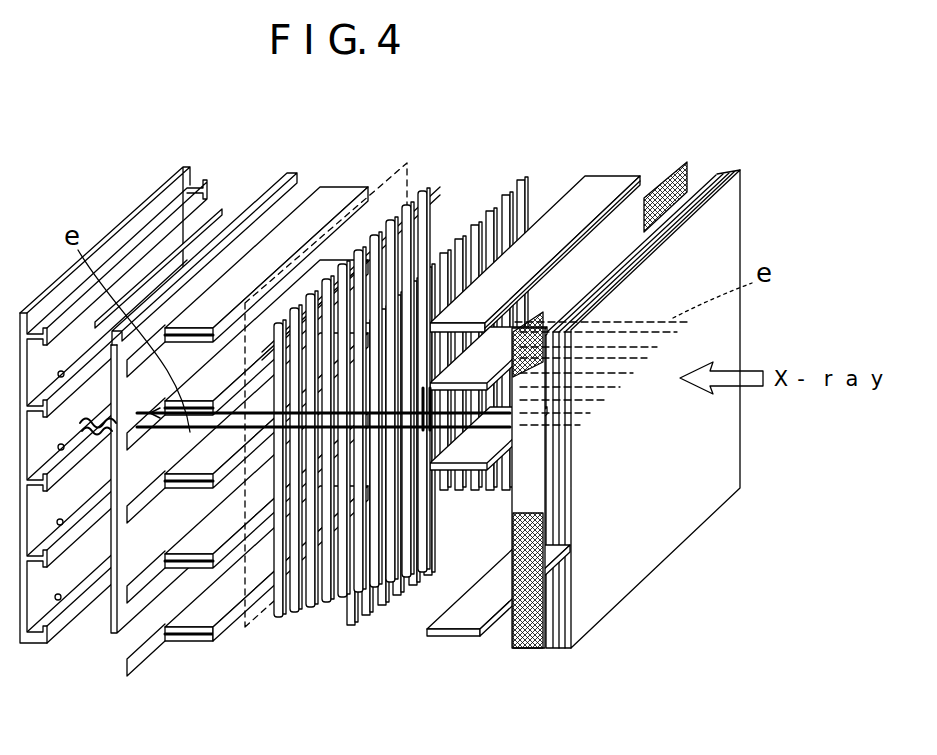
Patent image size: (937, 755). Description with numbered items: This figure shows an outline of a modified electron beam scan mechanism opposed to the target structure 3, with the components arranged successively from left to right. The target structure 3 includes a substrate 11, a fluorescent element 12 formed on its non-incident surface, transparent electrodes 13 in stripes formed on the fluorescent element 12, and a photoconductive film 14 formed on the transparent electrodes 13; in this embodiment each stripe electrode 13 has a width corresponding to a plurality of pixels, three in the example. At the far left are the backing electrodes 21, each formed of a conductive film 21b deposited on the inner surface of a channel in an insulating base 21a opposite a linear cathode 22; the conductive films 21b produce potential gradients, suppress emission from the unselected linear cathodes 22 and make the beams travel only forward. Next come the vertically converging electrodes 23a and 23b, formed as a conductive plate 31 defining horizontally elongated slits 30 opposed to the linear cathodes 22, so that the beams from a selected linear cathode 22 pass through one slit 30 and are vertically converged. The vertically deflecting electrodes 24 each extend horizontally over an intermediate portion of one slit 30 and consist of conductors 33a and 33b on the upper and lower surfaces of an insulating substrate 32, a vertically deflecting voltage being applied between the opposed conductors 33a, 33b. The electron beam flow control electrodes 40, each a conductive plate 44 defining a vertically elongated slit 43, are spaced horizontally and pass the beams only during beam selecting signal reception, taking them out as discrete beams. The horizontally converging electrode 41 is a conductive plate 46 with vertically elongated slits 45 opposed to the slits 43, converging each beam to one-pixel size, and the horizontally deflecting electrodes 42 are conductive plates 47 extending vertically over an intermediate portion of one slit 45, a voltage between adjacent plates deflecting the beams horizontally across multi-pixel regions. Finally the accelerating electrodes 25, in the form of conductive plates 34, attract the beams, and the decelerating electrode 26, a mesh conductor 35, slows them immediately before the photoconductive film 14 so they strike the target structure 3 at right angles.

The target structure 3 is at (644, 420).
The substrate 11 is at (575, 650).
The fluorescent element 12 is at (565, 650).
The transparent electrodes 13 is at (556, 650).
The photoconductive film 14 is at (590, 421).
The backing electrodes 21 is at (105, 421).
The insulating base 21a is at (37, 606).
The conductive film 21b is at (42, 612).
The linear cathodes 22 is at (224, 211).
The vertically converging electrode 23a is at (288, 172).
The vertically converging electrode 23b is at (407, 165).
The vertically deflecting electrodes 24 is at (343, 184).
The accelerating electrodes 25 is at (618, 170).
The decelerating electrode 26 is at (672, 178).
The slits 30 is at (186, 406).
The conductive plate 31 is at (110, 630).
The insulating substrate 32 is at (247, 430).
The conductor 33a is at (183, 617).
The conductor 33b is at (211, 632).
The conductive plates 34 is at (455, 637).
The mesh conductor 35 is at (522, 640).
The electron beam flow control electrodes 40 is at (351, 421).
The horizontally converging electrode 41 is at (450, 374).
The horizontally deflecting electrodes 42 is at (520, 172).
The slit 43 is at (298, 612).
The conductive plate 44 is at (280, 612).
The slits 45 is at (343, 604).
The conductive plate 46 is at (329, 610).
The conductive plate 47 is at (374, 622).